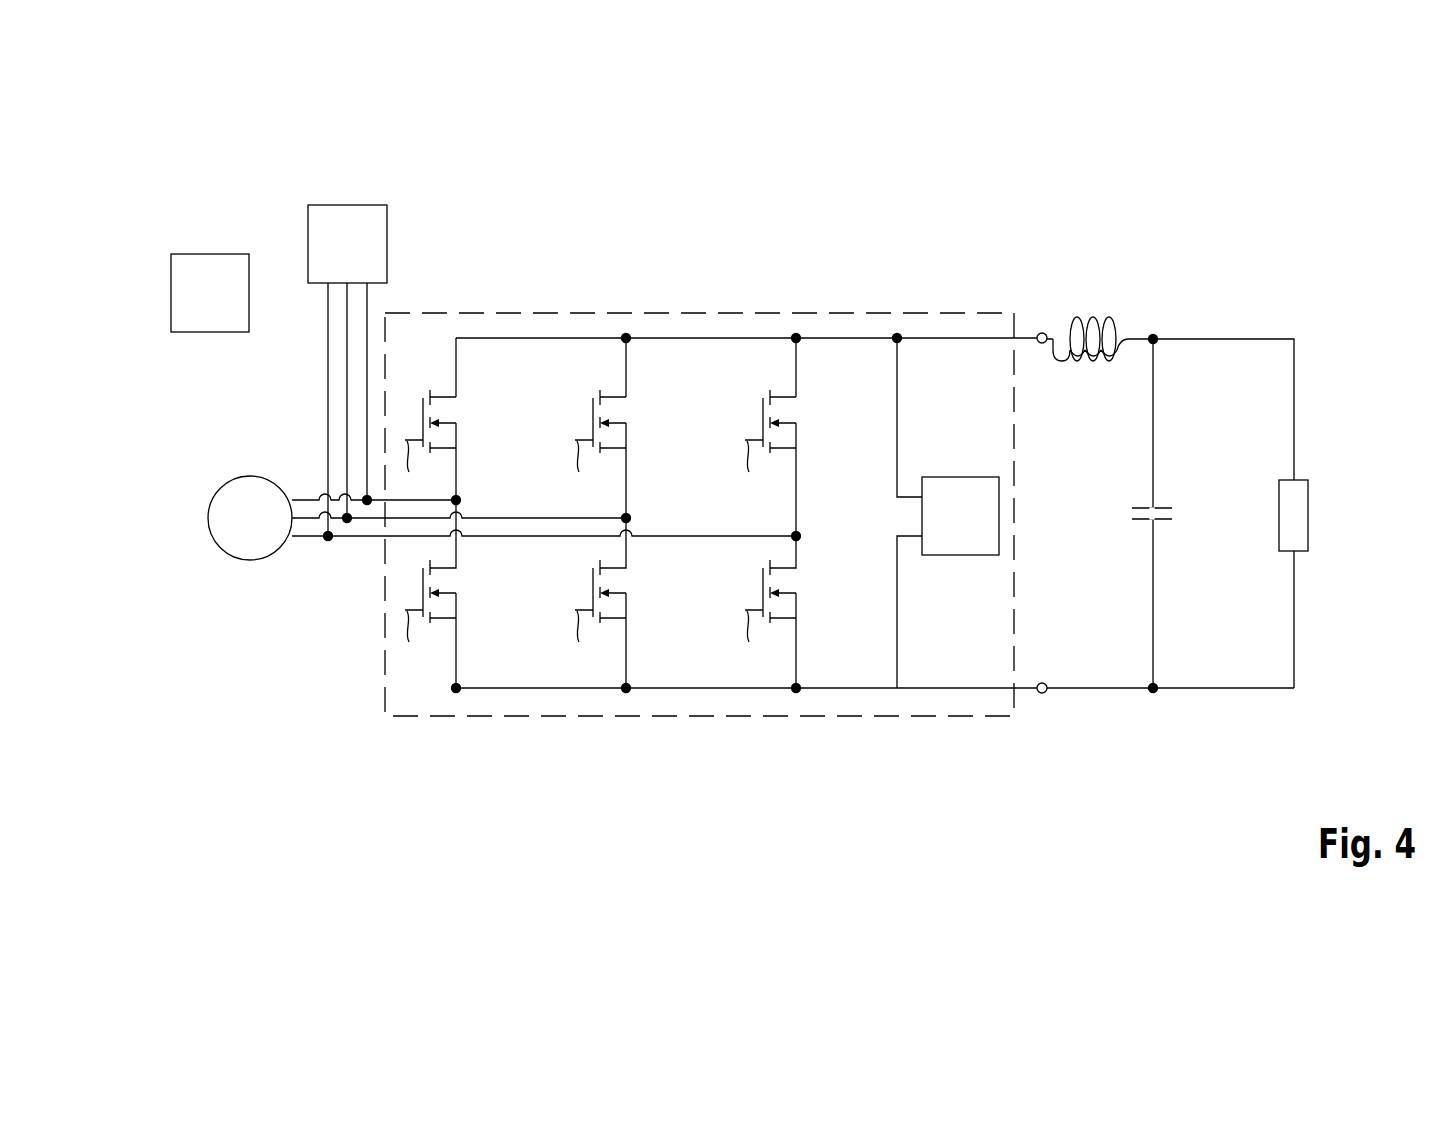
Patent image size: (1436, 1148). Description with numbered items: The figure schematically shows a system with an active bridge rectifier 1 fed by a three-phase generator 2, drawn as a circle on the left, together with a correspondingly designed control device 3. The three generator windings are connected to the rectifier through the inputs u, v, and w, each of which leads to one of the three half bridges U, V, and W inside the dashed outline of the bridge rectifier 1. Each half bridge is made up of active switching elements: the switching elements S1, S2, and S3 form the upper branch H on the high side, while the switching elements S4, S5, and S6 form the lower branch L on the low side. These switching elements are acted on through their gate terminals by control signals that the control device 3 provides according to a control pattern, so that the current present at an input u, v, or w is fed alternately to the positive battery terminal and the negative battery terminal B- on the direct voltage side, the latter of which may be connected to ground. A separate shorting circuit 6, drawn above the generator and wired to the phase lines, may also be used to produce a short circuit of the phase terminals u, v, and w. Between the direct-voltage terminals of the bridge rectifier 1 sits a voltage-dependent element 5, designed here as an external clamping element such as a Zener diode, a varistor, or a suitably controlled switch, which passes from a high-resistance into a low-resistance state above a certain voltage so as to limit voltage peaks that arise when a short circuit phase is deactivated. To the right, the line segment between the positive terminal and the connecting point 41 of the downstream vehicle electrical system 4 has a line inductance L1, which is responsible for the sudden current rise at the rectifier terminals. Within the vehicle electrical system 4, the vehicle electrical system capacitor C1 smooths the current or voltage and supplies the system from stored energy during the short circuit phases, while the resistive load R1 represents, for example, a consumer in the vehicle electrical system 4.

The bridge rectifier 1 is at (913, 313).
The generator 2 is at (250, 476).
The control device 3 is at (209, 254).
The vehicle electrical system 4 is at (1252, 328).
The voltage-dependent element 5 is at (960, 555).
The shorting circuit 6 is at (341, 205).
The connecting point 41 is at (1153, 336).
The active switching element S1 is at (474, 392).
The active switching element S2 is at (644, 392).
The active switching element S3 is at (814, 392).
The active switching element S4 is at (474, 612).
The active switching element S5 is at (644, 612).
The active switching element S6 is at (814, 612).
The line inductance L1 is at (1088, 310).
The vehicle electrical system capacitor C1 is at (1168, 500).
The resistive load R1 is at (1316, 516).
The upper branch H is at (872, 410).
The lower branch L is at (872, 607).
The half bridge U is at (456, 324).
The half bridge V is at (626, 324).
The half bridge W is at (796, 324).
The input u is at (306, 498).
The input v is at (305, 538).
The input w is at (366, 540).
The negative battery terminal B- is at (1045, 680).